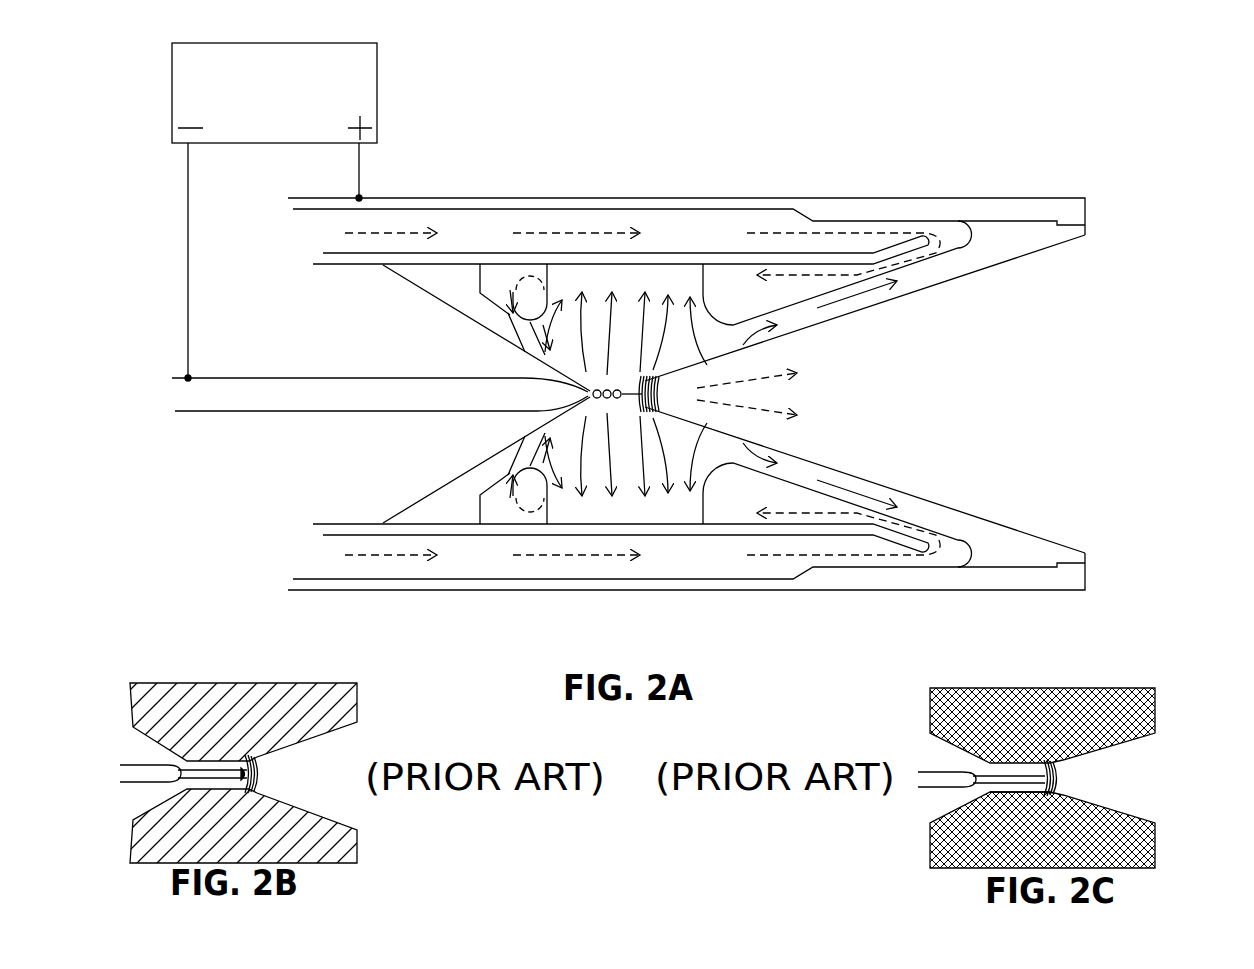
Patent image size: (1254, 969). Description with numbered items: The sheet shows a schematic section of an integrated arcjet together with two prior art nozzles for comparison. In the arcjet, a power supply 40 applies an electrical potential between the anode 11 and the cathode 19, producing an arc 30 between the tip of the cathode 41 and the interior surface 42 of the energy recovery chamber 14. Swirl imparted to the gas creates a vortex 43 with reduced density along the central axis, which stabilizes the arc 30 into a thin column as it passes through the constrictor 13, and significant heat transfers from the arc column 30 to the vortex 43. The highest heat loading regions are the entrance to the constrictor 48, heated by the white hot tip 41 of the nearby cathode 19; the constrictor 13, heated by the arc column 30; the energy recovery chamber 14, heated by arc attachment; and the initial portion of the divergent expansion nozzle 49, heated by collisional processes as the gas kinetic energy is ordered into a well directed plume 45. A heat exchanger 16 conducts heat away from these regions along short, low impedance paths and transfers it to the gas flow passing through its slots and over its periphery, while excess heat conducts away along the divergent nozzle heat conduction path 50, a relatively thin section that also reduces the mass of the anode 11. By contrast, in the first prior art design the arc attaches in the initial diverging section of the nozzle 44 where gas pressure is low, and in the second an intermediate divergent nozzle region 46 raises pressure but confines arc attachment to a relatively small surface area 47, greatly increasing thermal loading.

In FIG. 2A, the anode 11 is at (445, 287).
In FIG. 2A, the constrictor 13 is at (588, 398).
In FIG. 2A, the energy recovery chamber 14 is at (614, 398).
In FIG. 2A, the heat exchanger 16 is at (630, 307).
In FIG. 2A, the cathode 19 is at (242, 400).
In FIG. 2A, the arc 30 is at (612, 462).
In FIG. 2A, the power supply 40 is at (373, 97).
In FIG. 2A, the tip of the cathode 41 is at (540, 398).
In FIG. 2A, the interior surface of the energy recovery chamber 42 is at (660, 382).
In FIG. 2A, the vortex 43 is at (605, 465).
In FIG. 2B, the nozzle 44 is at (255, 758).
In FIG. 2A, the plume 45 is at (808, 400).
In FIG. 2C, the intermediate divergent nozzle region 46 is at (1050, 787).
In FIG. 2C, the arc attachment surface area 47 is at (1043, 792).
In FIG. 2A, the entrance to the constrictor 48 is at (585, 388).
In FIG. 2A, the divergent expansion nozzle 49 is at (710, 360).
In FIG. 2A, the heat conduction path 50 is at (883, 302).